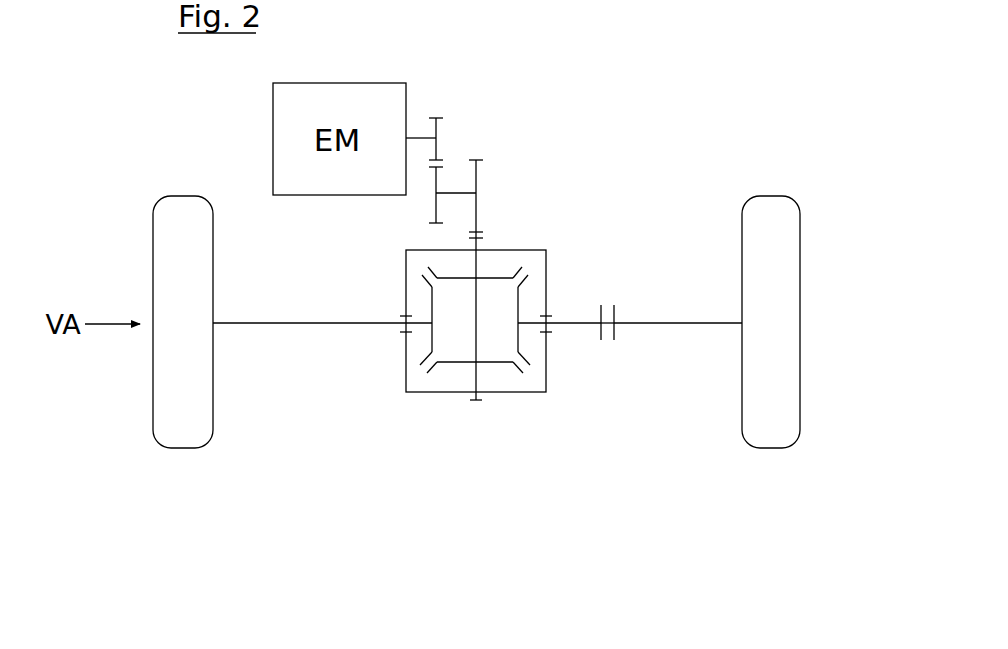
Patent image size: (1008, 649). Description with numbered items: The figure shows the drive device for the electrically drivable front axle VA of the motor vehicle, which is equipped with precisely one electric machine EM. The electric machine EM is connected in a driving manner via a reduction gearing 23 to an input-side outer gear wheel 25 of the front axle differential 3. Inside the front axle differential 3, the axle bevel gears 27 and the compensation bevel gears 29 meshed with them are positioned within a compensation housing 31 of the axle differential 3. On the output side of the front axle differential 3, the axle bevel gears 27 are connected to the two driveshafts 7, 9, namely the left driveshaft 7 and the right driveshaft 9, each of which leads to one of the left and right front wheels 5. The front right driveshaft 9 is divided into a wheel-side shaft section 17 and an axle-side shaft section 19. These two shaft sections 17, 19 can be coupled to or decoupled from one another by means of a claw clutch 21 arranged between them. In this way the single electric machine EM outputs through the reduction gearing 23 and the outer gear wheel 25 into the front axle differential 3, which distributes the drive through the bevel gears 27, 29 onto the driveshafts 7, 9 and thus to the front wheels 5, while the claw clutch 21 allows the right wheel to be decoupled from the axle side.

The front axle differential 3 is at (404, 396).
The front wheel 5 is at (153, 224).
The left driveshaft 7 is at (294, 323).
The right driveshaft 9 is at (630, 398).
The wheel-side shaft section 17 is at (707, 323).
The axle-side shaft section 19 is at (573, 323).
The claw clutch 21 is at (611, 296).
The reduction gearing 23 is at (427, 96).
The input-side outer gear wheel 25 is at (483, 237).
The axle bevel gears 27 is at (520, 300).
The compensation bevel gears 29 is at (495, 363).
The compensation housing 31 is at (546, 252).